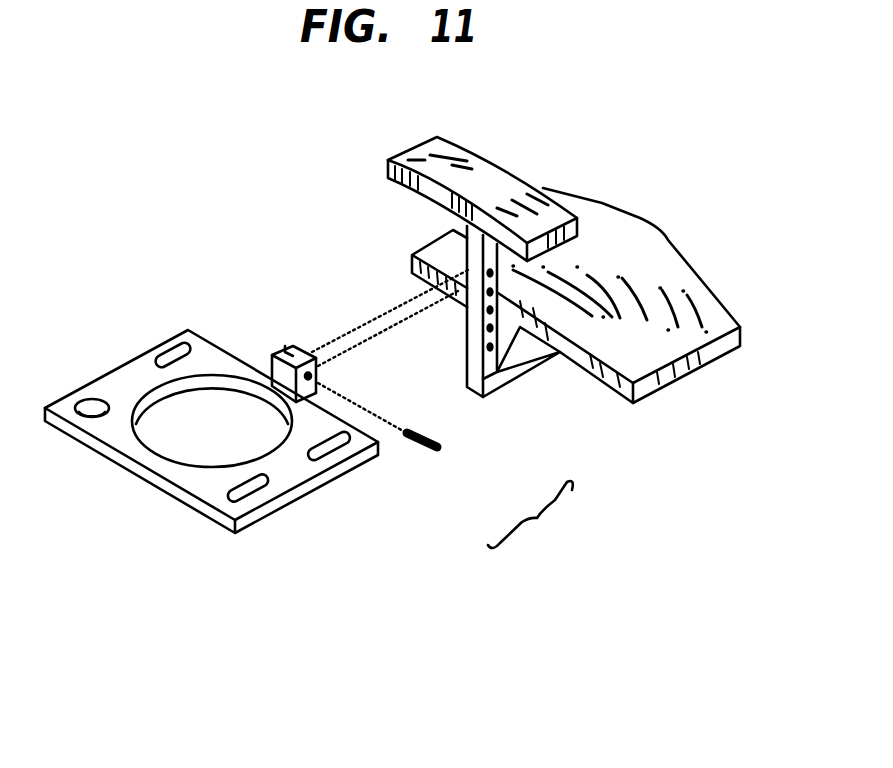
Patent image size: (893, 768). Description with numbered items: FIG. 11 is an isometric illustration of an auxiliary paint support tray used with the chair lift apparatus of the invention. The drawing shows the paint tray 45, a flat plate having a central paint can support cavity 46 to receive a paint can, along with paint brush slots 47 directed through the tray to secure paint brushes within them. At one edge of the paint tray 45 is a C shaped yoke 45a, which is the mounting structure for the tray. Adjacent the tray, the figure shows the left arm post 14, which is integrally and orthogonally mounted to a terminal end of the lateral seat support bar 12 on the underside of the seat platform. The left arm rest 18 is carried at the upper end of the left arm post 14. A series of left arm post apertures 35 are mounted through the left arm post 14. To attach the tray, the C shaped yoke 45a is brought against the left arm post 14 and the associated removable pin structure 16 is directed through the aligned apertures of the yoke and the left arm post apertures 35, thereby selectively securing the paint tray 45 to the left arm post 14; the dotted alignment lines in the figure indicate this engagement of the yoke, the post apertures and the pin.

The lateral seat support bar 12 is at (512, 387).
The left arm post 14 is at (473, 352).
The removable pin 16 is at (419, 449).
The left arm rest 18 is at (490, 173).
The left arm post apertures 35 is at (477, 326).
The paint tray 45 is at (208, 361).
The C shaped yoke 45a is at (316, 331).
The central paint can support cavity 46 is at (214, 445).
The paint brush slots 47 is at (178, 354).